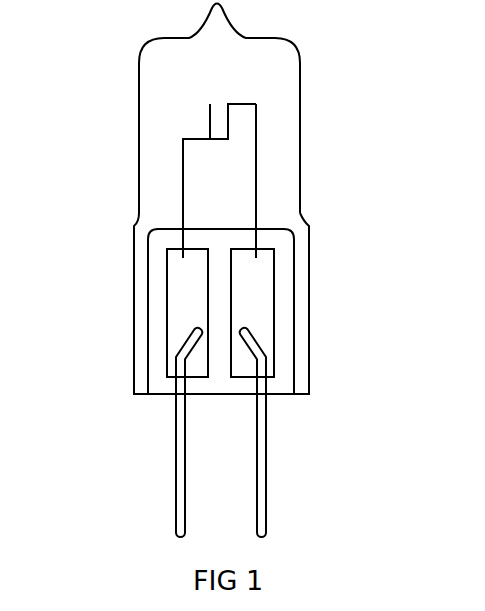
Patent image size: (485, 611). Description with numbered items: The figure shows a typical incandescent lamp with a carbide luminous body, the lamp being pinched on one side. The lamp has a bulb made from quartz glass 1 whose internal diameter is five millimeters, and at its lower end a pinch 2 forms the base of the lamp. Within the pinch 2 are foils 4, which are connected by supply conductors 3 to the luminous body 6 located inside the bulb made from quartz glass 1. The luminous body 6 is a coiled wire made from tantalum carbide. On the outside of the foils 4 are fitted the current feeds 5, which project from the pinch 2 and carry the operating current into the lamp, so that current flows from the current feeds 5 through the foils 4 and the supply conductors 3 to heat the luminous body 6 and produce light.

The bulb made from quartz glass 1 is at (300, 116).
The pinch 2 is at (309, 297).
The supply conductors 3 is at (256, 177).
The foils 4 is at (190, 295).
The current feeds 5 is at (266, 456).
The luminous body 6 is at (219, 121).